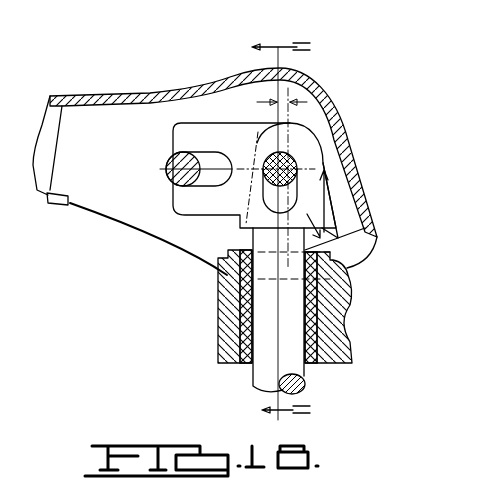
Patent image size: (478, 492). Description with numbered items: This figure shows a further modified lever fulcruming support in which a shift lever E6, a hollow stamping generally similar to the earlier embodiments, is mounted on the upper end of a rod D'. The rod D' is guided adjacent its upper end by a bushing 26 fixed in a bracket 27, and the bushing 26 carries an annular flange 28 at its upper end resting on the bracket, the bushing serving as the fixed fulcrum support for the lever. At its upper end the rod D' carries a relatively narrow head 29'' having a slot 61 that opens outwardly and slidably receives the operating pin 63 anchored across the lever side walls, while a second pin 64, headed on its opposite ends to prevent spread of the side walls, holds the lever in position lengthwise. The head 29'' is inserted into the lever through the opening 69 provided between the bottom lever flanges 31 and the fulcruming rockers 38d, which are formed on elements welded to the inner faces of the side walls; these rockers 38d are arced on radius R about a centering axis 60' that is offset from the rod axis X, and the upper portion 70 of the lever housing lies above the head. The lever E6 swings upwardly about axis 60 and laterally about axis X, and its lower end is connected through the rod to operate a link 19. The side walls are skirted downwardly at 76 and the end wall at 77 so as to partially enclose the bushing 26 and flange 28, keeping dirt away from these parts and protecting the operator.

The shift lever E6 is at (137, 68).
The head 29'' is at (207, 92).
The housing top 70 is at (312, 84).
The slot 61 is at (192, 152).
The pin 64 is at (267, 152).
The operating pin 63 is at (166, 166).
The centering axis 60' is at (335, 151).
The axis 60 is at (265, 201).
The rockers 38d is at (358, 212).
The radius R is at (314, 204).
The end wall skirt 77 is at (376, 236).
The bottom terminal flanges 31 is at (55, 203).
The opening 69 is at (113, 218).
The annular flange 28 is at (227, 252).
The side wall skirt 76 is at (218, 266).
The bracket 27 is at (218, 298).
The bushing 26 is at (238, 330).
The rod D' is at (258, 311).
The link 19 is at (256, 228).
The axis X is at (278, 431).